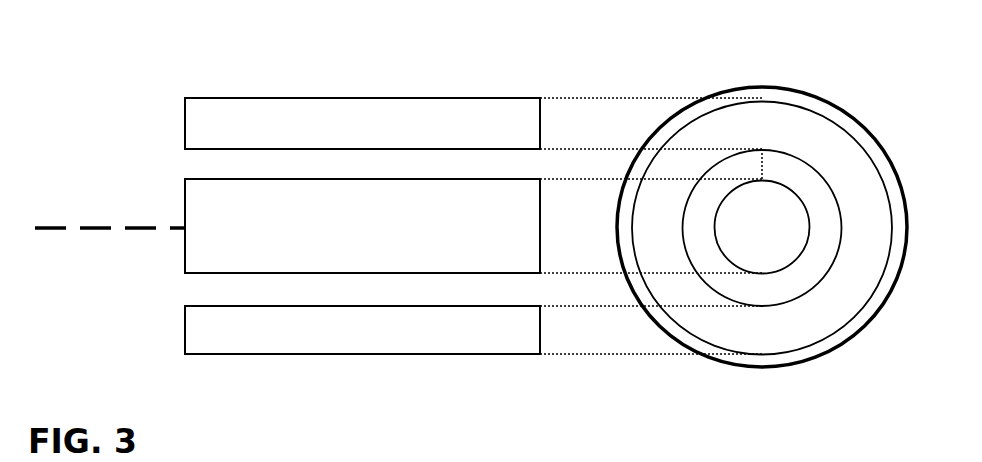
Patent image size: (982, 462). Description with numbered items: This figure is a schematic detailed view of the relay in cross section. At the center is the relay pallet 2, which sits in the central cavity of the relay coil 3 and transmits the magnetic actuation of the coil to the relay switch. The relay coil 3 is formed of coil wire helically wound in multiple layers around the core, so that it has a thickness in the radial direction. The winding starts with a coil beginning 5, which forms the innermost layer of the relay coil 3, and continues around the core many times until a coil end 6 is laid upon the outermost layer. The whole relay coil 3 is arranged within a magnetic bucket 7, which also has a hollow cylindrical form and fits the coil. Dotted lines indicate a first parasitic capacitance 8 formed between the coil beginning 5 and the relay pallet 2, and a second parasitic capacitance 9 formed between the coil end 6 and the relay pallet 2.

The relay pallet 2 is at (233, 179).
The relay coil 3 is at (392, 98).
The coil beginning 5 is at (727, 157).
The coil end 6 is at (798, 158).
The magnetic bucket 7 is at (728, 367).
The first parasitic capacitance 8 is at (762, 166).
The second parasitic capacitance 9 is at (812, 131).